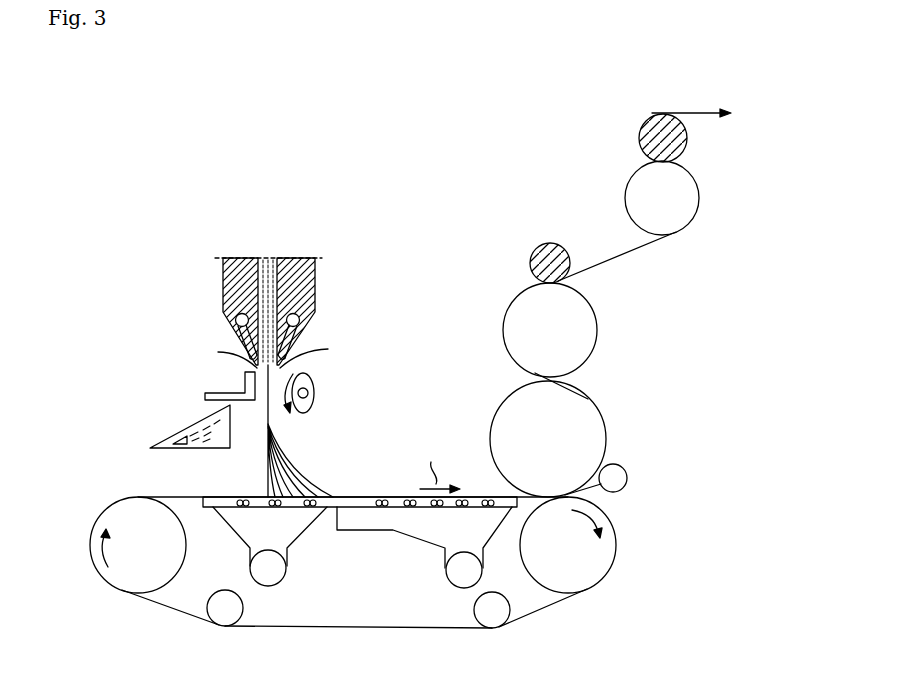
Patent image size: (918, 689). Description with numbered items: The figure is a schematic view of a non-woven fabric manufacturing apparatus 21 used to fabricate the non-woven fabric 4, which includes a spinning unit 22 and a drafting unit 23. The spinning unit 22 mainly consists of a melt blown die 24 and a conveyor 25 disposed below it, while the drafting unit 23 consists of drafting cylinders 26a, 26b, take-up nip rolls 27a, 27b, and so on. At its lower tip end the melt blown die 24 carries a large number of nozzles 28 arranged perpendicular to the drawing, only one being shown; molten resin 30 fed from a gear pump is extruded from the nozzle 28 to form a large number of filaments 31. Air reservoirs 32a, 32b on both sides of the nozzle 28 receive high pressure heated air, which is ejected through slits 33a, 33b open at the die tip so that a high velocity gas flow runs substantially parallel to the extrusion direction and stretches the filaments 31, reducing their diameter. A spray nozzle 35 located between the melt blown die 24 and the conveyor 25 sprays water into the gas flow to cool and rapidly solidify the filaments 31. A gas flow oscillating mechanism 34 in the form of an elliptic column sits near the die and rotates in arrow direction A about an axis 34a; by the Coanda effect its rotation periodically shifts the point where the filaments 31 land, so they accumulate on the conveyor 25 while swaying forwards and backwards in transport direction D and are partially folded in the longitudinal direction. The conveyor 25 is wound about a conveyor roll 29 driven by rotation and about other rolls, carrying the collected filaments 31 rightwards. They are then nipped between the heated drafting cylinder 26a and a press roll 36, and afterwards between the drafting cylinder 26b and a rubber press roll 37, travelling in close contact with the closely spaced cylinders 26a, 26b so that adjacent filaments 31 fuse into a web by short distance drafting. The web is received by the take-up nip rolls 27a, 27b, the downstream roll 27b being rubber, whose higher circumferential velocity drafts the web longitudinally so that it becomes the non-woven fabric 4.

The non-woven fabric 4 is at (702, 113).
The non-woven fabric manufacturing apparatus 21 is at (322, 203).
The spinning unit 22 is at (340, 294).
The drafting unit 23 is at (676, 312).
The melt blown die 24 is at (223, 292).
The conveyor 25 is at (540, 608).
The drafting cylinder 26a is at (582, 401).
The drafting cylinder 26b is at (583, 342).
The take-up nip roll 27a is at (682, 182).
The take-up nip roll 27b is at (677, 137).
The nozzle 28 is at (245, 378).
The conveyor roll 29 is at (600, 550).
The molten resin 30 is at (270, 258).
The filaments 31 is at (300, 471).
The air reservoir 32a is at (235, 319).
The air reservoir 32b is at (300, 319).
The slit 33a is at (216, 356).
The slit 33b is at (319, 354).
The gas flow oscillating mechanism 34 is at (316, 380).
The axis 34a is at (309, 395).
The spray nozzle 35 is at (174, 449).
The press roll 36 is at (620, 481).
The rubber press roll 37 is at (544, 246).